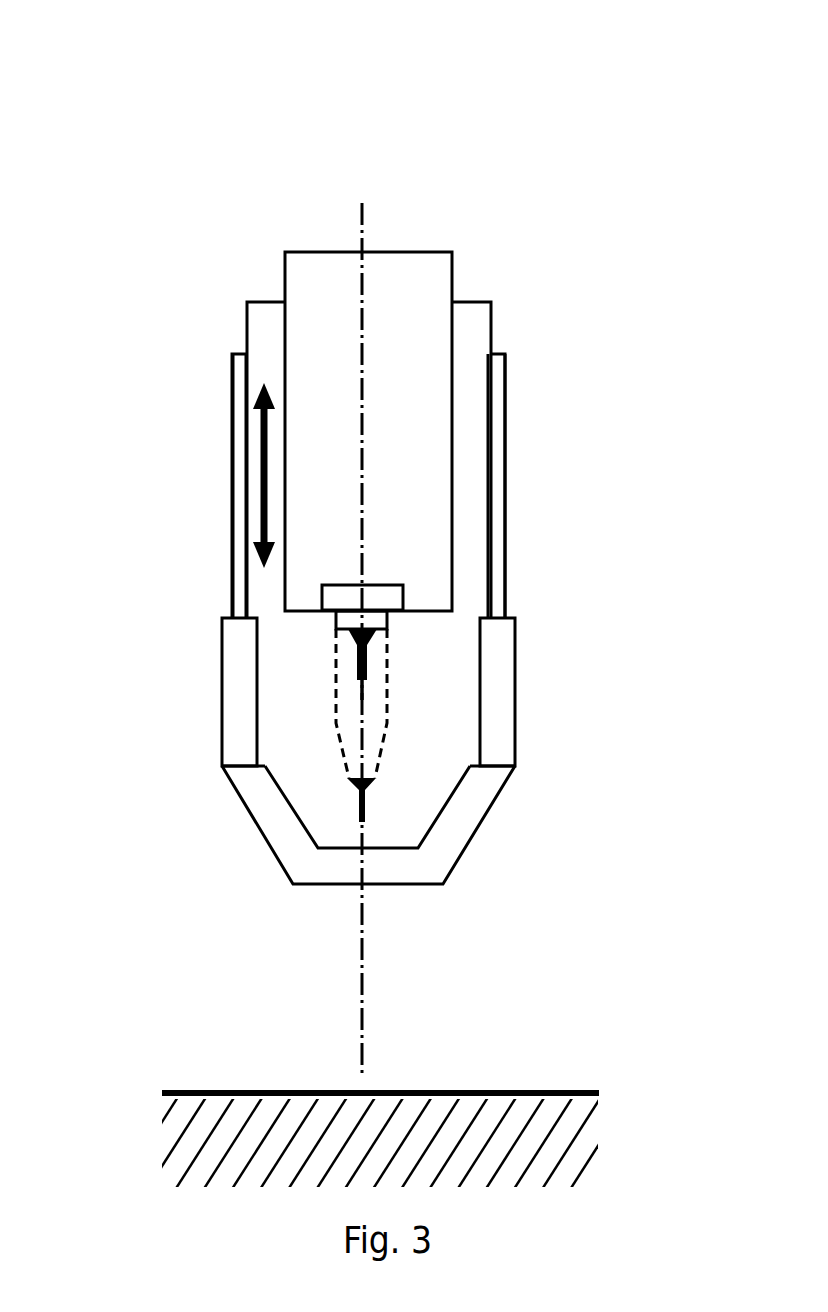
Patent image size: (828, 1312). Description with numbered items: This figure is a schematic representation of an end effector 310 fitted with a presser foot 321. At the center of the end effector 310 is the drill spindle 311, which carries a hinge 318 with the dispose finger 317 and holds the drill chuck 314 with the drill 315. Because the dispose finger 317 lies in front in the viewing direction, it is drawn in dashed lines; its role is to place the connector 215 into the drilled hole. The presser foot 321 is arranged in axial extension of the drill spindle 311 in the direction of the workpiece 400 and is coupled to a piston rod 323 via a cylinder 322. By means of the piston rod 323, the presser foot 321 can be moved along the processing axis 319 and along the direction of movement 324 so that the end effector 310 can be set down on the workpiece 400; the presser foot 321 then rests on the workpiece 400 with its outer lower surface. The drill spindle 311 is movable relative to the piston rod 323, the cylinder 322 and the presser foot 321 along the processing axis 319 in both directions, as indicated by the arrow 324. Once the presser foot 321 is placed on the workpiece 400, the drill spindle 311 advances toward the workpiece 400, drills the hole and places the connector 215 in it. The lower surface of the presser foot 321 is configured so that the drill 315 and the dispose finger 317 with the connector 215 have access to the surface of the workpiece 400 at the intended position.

The end effector 310 is at (233, 157).
The drill spindle 311 is at (413, 448).
The drill chuck 314 is at (363, 662).
The drill 315 is at (365, 800).
The dispose finger 317 is at (335, 707).
The hinge 318 is at (403, 593).
The processing axis 319 is at (362, 943).
The presser foot 321 is at (245, 805).
The cylinder 322 is at (233, 675).
The piston rod 323 is at (238, 475).
The direction of movement 324 is at (273, 435).
The connector 215 is at (363, 702).
The workpiece 400 is at (560, 1090).